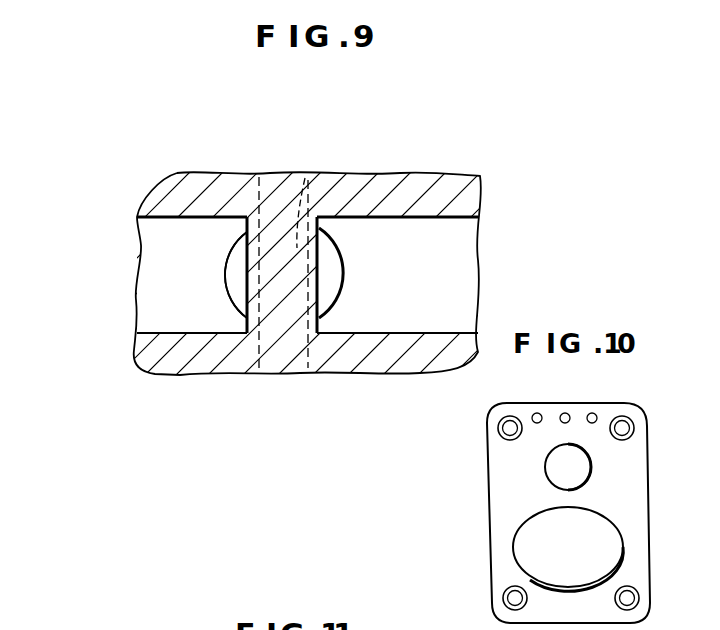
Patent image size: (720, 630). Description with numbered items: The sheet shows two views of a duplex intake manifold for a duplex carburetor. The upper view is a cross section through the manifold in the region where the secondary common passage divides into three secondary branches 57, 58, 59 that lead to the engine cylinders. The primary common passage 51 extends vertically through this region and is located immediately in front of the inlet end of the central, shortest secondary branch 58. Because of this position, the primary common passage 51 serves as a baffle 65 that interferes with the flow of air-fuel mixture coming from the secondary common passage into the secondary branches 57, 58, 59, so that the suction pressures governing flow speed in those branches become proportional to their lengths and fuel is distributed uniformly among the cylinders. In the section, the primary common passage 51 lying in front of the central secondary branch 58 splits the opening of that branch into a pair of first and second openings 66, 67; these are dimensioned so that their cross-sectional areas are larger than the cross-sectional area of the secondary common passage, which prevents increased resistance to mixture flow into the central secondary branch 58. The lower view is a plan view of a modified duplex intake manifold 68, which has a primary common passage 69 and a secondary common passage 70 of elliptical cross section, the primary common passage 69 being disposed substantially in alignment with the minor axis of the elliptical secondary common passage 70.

In FIG. 9, the primary common passage 51 is at (287, 252).
In FIG. 9, the secondary branch 57 is at (179, 232).
In FIG. 9, the central secondary branch 58 is at (232, 235).
In FIG. 9, the secondary branch 59 is at (425, 235).
In FIG. 9, the baffle 65 is at (272, 318).
In FIG. 9, the first opening 66 is at (232, 285).
In FIG. 9, the second opening 67 is at (337, 303).
In FIG. 10, the modified duplex intake manifold 68 is at (649, 462).
In FIG. 10, the primary common passage 69 is at (549, 470).
In FIG. 10, the secondary common passage 70 is at (624, 546).